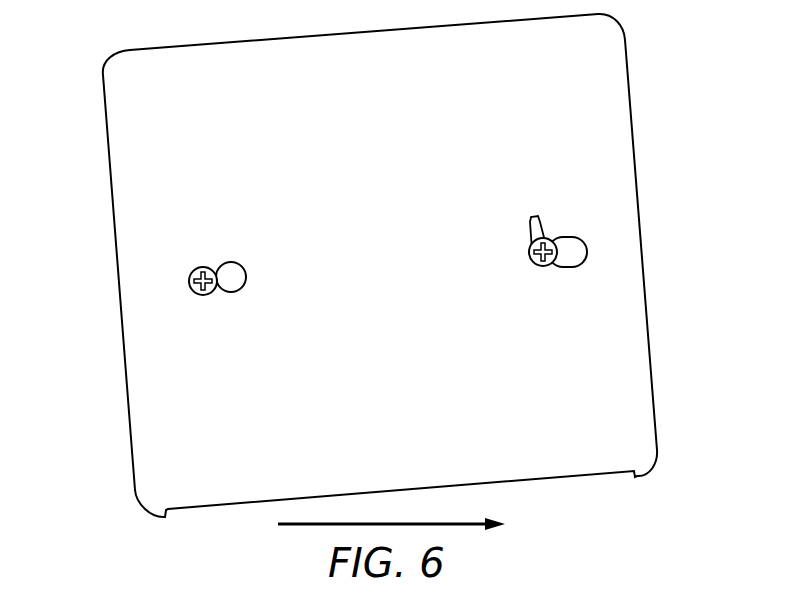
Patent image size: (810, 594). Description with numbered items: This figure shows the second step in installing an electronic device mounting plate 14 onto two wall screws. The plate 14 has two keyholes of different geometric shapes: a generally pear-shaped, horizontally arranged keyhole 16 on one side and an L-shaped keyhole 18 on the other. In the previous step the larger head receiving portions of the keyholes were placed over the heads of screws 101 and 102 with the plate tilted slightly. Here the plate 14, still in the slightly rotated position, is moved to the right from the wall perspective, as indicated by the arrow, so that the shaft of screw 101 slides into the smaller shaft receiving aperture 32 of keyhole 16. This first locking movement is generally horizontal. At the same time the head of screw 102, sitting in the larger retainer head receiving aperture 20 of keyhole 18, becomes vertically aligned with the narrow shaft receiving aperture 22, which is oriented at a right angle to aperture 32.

The electronic device mounting plate 14 is at (623, 412).
The keyhole 16 is at (227, 293).
The shaft receiving aperture 32 is at (223, 265).
The screw 101 is at (190, 280).
The shaft receiving aperture 22 is at (543, 223).
The retainer head receiving aperture 20 is at (575, 260).
The keyhole 18 is at (563, 267).
The screw 102 is at (556, 246).